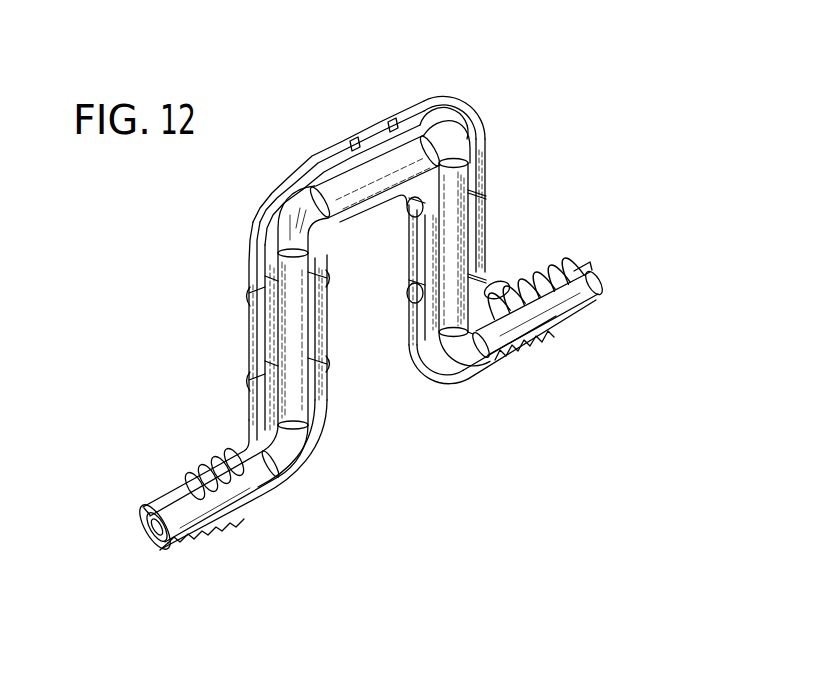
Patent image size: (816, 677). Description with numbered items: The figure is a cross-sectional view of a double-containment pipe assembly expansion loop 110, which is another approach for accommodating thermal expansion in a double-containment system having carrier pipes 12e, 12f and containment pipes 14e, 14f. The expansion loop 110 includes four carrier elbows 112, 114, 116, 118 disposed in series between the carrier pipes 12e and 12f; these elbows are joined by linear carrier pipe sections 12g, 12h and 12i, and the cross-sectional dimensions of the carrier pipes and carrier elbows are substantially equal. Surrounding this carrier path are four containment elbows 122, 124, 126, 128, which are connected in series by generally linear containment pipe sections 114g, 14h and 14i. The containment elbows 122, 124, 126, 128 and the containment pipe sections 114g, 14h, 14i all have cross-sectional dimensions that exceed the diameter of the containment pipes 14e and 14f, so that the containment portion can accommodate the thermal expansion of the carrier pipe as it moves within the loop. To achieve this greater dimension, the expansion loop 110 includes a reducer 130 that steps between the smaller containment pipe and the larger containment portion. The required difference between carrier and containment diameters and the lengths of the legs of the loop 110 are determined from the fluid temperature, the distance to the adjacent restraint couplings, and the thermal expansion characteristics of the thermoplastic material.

The double-containment expansion loop 110 is at (549, 119).
The carrier elbow 112 is at (287, 447).
The carrier elbow 114 is at (300, 216).
The containment pipe section 114g is at (258, 342).
The containment pipe section 14h is at (357, 134).
The containment pipe section 14i is at (487, 203).
The containment pipe 14e is at (140, 512).
The containment pipe 14f is at (587, 262).
The carrier elbow 116 is at (455, 116).
The carrier elbow 118 is at (458, 362).
The containment elbow 122 is at (248, 413).
The containment elbow 124 is at (255, 272).
The containment elbow 126 is at (413, 103).
The containment elbow 128 is at (185, 470).
The reducer 130 is at (530, 264).
The carrier pipe 12e is at (223, 500).
The carrier pipe 12f is at (598, 286).
The linear carrier pipe section 12g is at (295, 398).
The linear carrier pipe section 12h is at (347, 187).
The linear carrier pipe section 12i is at (437, 321).